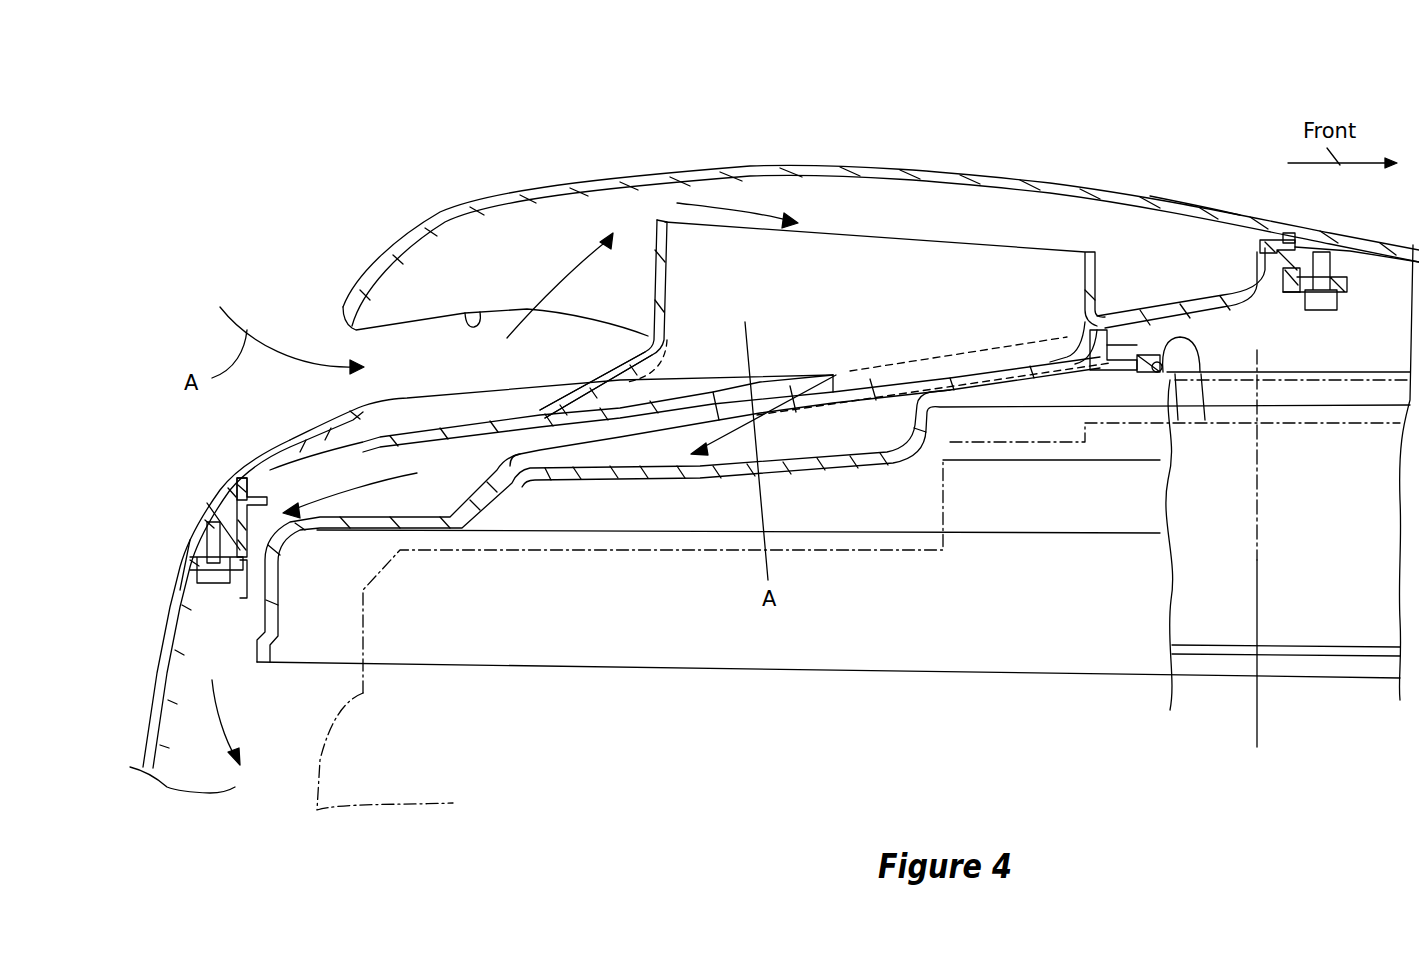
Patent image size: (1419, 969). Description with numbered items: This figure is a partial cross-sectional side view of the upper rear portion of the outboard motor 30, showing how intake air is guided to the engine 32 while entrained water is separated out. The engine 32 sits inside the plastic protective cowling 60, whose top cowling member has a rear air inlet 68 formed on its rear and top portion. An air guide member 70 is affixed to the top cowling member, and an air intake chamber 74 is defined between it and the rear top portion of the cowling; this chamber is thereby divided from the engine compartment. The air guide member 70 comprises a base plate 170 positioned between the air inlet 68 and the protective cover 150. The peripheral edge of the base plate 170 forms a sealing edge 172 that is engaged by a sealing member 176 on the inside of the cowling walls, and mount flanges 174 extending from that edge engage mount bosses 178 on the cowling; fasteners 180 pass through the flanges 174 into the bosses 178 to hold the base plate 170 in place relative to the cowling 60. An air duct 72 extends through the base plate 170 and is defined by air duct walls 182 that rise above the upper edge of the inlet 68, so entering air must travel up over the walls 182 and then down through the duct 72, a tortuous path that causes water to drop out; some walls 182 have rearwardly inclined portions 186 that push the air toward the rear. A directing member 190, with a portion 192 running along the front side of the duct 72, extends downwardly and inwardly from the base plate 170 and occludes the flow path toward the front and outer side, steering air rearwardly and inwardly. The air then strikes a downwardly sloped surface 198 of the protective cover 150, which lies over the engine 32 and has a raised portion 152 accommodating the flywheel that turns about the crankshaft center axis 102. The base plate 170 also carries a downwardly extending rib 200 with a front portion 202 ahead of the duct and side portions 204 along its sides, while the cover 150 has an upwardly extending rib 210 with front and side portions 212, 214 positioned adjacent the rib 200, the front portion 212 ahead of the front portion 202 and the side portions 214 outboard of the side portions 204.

The outboard motor 30 is at (318, 181).
The engine 32 is at (1012, 405).
The protective cowling 60 is at (1172, 192).
The rear air inlet 68 is at (480, 313).
The air guide member 70 is at (614, 425).
The air duct 72 is at (822, 255).
The air intake chamber 74 is at (1158, 246).
The center axis 102 is at (1257, 713).
The protective cover 150 is at (744, 690).
The raised portion 152 is at (1175, 434).
The base plate 170 is at (405, 433).
The sealing edge 172 is at (1260, 250).
The mount flanges 174 is at (1293, 287).
The sealing member 176 is at (1280, 238).
The mount bosses 178 is at (1337, 260).
The fasteners 180 is at (1322, 313).
The air duct walls 182 is at (655, 247).
The rearwardly inclined portions 186 is at (607, 370).
The directing member 190 is at (920, 377).
The front portion of directing member 192 is at (1067, 350).
The downwardly sloped surface 198 is at (674, 479).
The downwardly extending rib 200 is at (1120, 318).
The front rib portion 202 is at (1153, 340).
The side rib portions 204 is at (763, 437).
The cover rib 210 is at (1205, 420).
The cover rib front portion 212 is at (1158, 377).
The cover rib side portions 214 is at (864, 432).